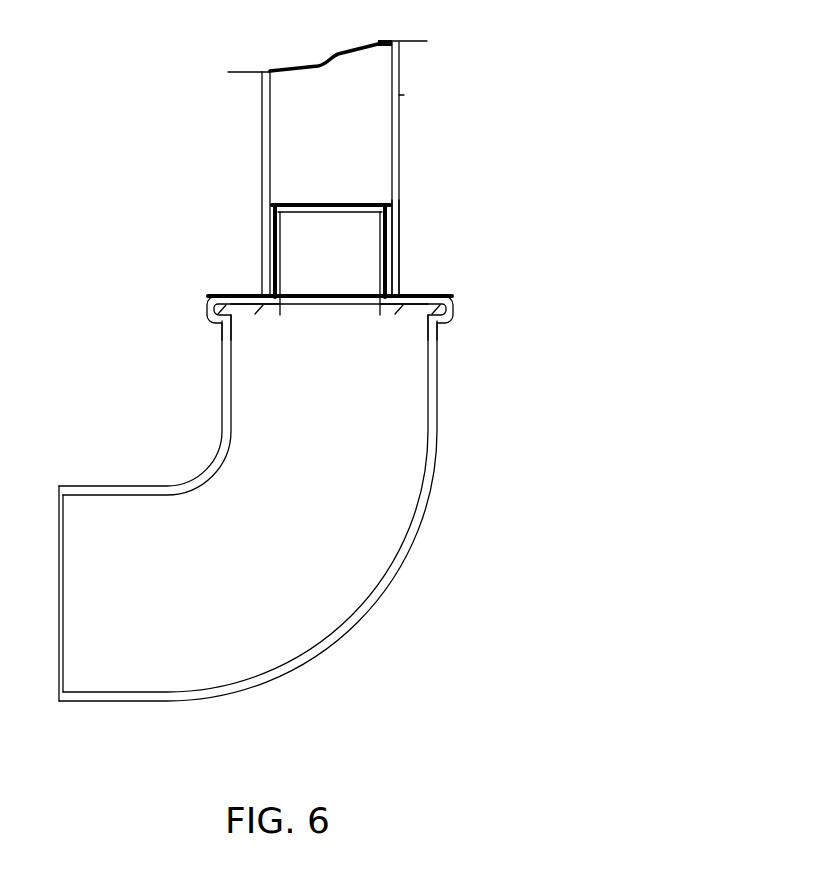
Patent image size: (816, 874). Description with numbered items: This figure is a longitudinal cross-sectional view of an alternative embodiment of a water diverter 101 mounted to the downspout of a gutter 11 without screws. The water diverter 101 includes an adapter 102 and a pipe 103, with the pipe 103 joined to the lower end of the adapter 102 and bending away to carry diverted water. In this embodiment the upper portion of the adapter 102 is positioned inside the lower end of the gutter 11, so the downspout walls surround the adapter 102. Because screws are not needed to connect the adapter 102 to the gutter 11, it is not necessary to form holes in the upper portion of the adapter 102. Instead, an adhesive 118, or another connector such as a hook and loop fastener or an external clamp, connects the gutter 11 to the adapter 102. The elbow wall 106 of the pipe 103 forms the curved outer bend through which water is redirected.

The gutter 11 is at (309, 154).
The adhesive 118 is at (270, 258).
The adapter 102 is at (406, 255).
The water diverter 101 is at (361, 448).
The pipe 103 is at (212, 346).
The elbow outer wall 106 is at (404, 571).